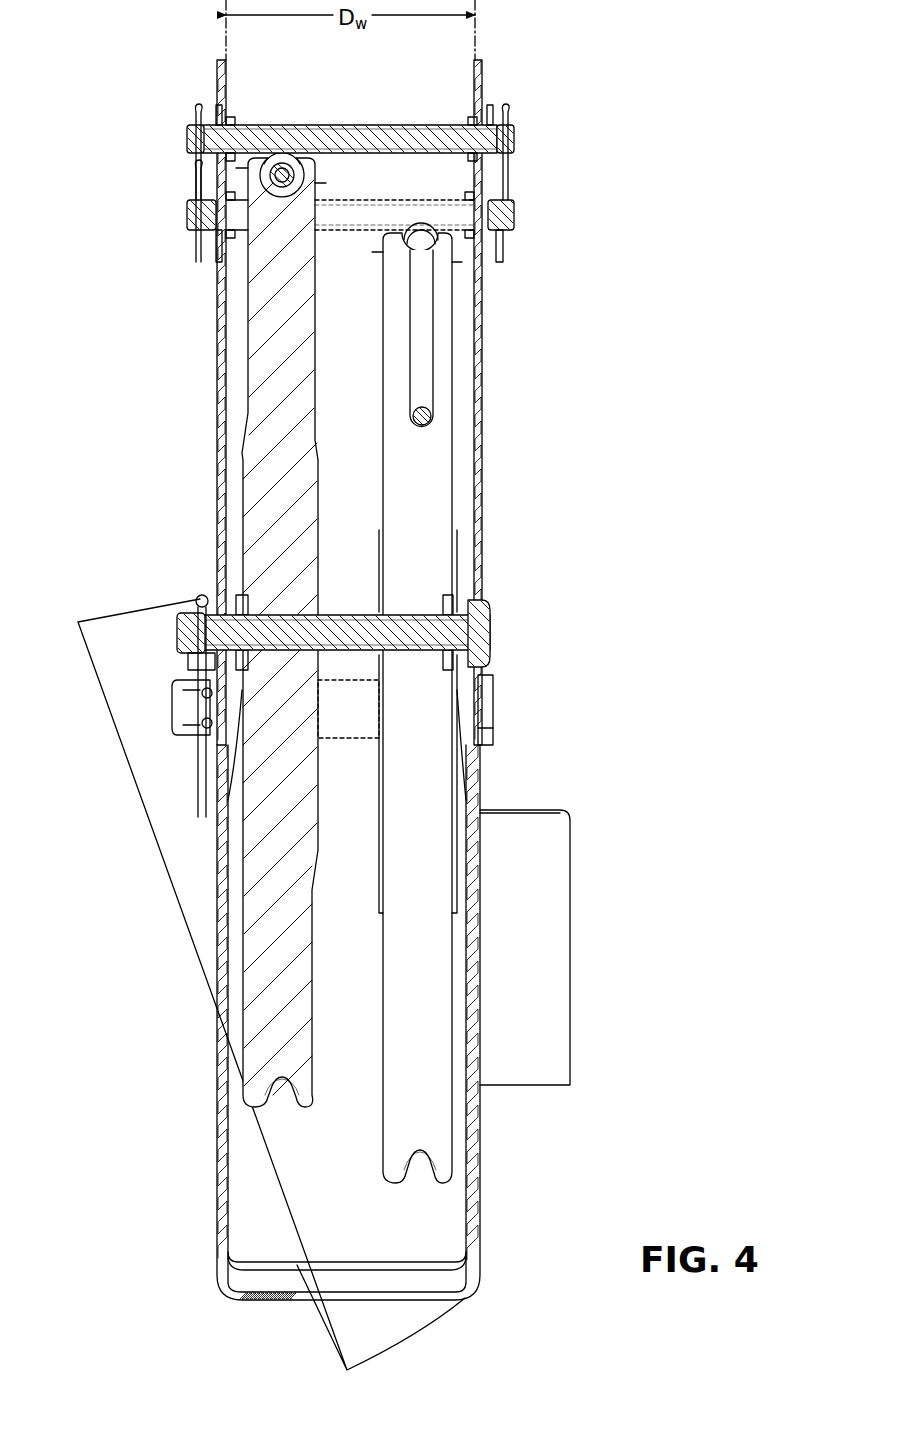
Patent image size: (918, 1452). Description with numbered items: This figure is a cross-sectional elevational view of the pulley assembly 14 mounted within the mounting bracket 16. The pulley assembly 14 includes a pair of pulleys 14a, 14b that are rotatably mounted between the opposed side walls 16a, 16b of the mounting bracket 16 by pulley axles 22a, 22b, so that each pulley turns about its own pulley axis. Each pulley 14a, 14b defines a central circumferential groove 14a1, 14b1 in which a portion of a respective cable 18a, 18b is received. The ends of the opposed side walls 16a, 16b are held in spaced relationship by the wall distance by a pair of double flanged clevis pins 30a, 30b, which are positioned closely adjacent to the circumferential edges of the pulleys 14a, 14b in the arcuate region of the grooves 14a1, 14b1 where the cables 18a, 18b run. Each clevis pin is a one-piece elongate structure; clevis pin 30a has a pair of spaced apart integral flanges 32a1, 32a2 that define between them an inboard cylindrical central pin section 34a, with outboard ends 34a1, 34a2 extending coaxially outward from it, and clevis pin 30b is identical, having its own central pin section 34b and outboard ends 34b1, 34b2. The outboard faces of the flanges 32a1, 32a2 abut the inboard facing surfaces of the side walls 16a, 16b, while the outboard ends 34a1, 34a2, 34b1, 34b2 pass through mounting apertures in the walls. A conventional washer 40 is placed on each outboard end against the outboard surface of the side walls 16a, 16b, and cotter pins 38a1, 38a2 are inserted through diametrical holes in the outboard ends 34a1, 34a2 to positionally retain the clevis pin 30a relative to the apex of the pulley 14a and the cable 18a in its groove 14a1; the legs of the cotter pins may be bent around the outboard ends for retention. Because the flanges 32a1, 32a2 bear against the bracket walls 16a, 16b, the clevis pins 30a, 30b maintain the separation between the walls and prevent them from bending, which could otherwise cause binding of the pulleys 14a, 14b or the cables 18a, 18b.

The pulley assembly 14 is at (305, 712).
The pulley 14a is at (220, 675).
The central circumferential groove 14a1 is at (270, 1090).
The pulley 14b is at (472, 749).
The central circumferential groove 14b1 is at (415, 1165).
The mounting bracket 16 is at (352, 680).
The side wall 16a is at (480, 458).
The side wall 16b is at (220, 488).
The cable 18a is at (283, 170).
The cable 18b is at (423, 375).
The pulley axle 22a is at (272, 612).
The pulley axle 22b is at (362, 712).
The double flanged clevis pin 30a is at (317, 183).
The double flanged clevis pin 30b is at (350, 236).
The integral flange 32a1 is at (468, 118).
The integral flange 32a2 is at (232, 240).
The inboard cylindrical central pin section 34a is at (272, 125).
The inboard cylindrical central pin section 34b is at (375, 205).
The outboard end 34a1 is at (512, 138).
The outboard end 34a2 is at (188, 138).
The outboard end 34b1 is at (512, 213).
The outboard end 34b2 is at (190, 218).
The cotter pin 38a1 is at (508, 110).
The cotter pin 38a2 is at (196, 110).
The washer 40 is at (218, 108).